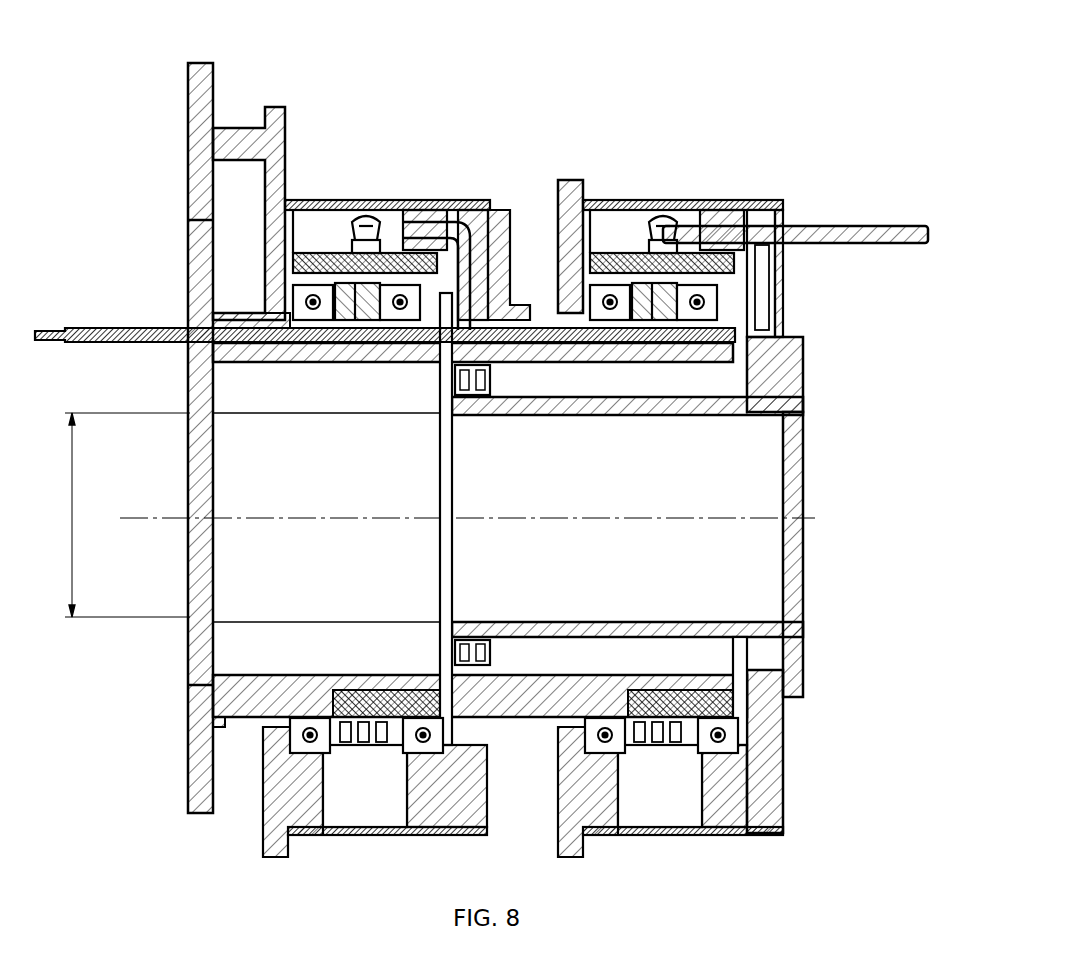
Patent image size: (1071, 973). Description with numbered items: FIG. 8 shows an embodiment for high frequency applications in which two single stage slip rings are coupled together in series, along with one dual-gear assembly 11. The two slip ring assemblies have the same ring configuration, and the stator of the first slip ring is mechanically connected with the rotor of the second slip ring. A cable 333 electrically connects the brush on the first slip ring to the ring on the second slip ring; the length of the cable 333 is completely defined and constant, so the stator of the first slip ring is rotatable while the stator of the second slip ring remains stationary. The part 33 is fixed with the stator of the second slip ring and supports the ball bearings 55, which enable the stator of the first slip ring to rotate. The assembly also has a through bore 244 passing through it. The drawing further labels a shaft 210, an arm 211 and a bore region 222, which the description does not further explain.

The dual-gear assembly 11 is at (185, 115).
The shaft 210 is at (100, 318).
The cable 333 is at (455, 200).
The arm 211 is at (847, 224).
The part 33 is at (807, 395).
The bore 222 is at (815, 513).
The ball bearings 55 is at (510, 653).
The through bore 244 is at (117, 515).